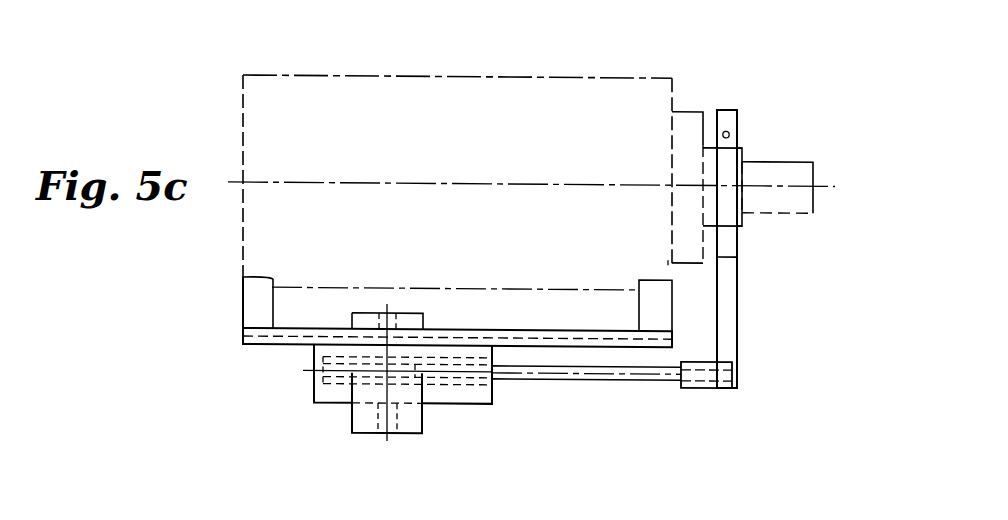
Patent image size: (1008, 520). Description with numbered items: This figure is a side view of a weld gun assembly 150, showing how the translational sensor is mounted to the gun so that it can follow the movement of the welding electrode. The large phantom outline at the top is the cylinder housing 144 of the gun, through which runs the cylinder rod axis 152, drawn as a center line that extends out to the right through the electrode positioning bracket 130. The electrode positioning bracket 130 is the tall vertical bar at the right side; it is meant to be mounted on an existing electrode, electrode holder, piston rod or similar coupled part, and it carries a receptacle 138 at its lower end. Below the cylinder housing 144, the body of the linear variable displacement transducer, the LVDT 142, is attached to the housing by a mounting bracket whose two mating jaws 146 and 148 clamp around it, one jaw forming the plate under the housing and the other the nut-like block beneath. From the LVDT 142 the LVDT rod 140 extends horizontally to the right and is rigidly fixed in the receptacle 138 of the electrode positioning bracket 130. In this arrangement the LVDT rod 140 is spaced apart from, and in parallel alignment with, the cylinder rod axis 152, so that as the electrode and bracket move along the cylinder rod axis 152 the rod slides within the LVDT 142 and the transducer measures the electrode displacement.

The electrode positioning bracket 130 is at (748, 324).
The receptacle 138 is at (737, 371).
The LVDT rod 140 is at (592, 393).
The linear variable displacement transducer (LVDT) 142 is at (460, 418).
The cylinder housing 144 is at (570, 72).
The mating jaw 146 is at (229, 327).
The mating jaw 148 is at (340, 426).
The weld gun assembly 150 is at (363, 74).
The cylinder rod axis 152 is at (825, 184).